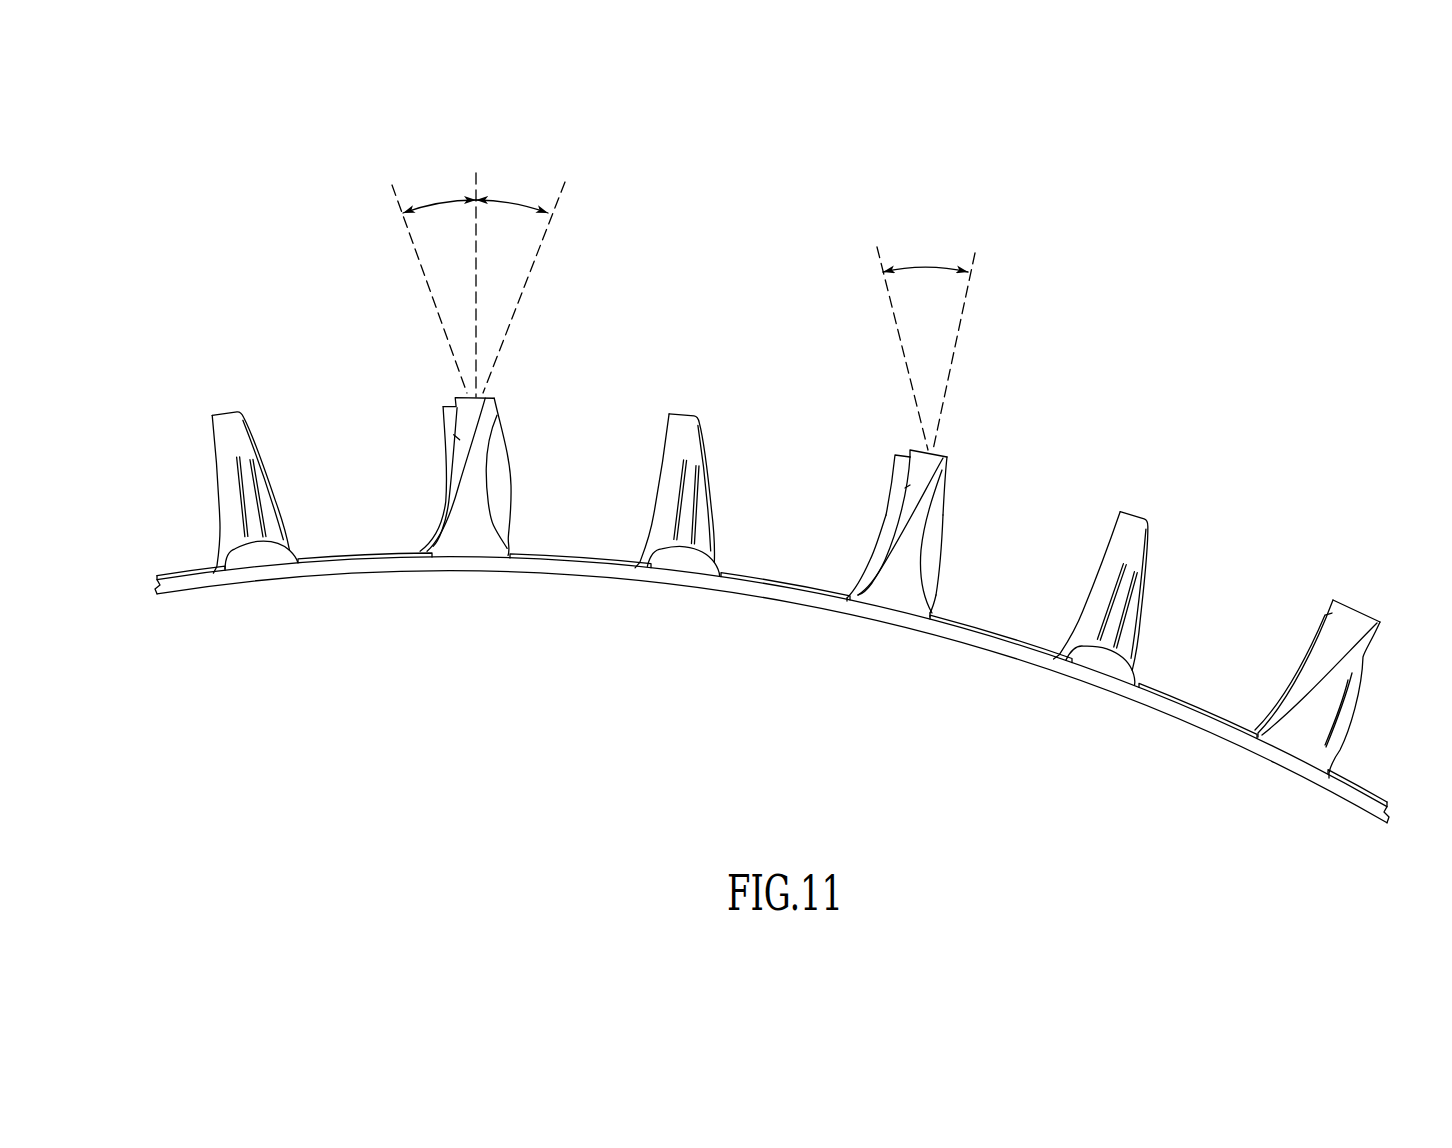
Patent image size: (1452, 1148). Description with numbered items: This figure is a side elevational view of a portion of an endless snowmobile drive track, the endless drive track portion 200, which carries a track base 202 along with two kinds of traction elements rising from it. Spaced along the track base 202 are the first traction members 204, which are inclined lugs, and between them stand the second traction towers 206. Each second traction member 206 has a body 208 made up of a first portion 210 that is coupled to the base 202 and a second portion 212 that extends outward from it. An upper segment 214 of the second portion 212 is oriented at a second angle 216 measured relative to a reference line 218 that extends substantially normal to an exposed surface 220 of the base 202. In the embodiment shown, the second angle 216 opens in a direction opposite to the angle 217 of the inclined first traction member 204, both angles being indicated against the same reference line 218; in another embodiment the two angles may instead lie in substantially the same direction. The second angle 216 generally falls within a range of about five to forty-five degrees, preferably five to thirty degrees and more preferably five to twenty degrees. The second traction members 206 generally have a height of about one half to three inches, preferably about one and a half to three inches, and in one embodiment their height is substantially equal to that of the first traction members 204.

The endless drive track portion 200 is at (1201, 278).
The track base 202 is at (1018, 660).
The first traction member 204 is at (749, 506).
The second traction tower 206 is at (508, 495).
The body 208 is at (939, 555).
The first portion 210 is at (933, 604).
The second portion 212 is at (945, 486).
The upper segment 214 is at (898, 485).
The second angle 216 is at (438, 203).
The angle 217 is at (508, 202).
The reference line 218 is at (477, 178).
The exposed surface 220 is at (325, 556).